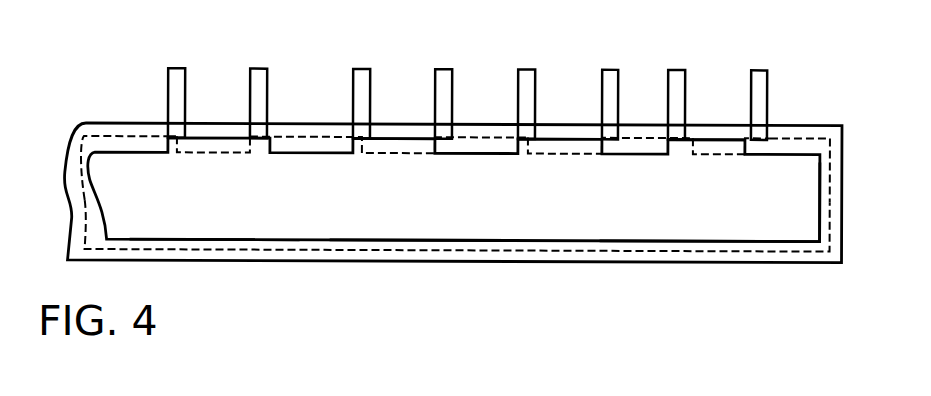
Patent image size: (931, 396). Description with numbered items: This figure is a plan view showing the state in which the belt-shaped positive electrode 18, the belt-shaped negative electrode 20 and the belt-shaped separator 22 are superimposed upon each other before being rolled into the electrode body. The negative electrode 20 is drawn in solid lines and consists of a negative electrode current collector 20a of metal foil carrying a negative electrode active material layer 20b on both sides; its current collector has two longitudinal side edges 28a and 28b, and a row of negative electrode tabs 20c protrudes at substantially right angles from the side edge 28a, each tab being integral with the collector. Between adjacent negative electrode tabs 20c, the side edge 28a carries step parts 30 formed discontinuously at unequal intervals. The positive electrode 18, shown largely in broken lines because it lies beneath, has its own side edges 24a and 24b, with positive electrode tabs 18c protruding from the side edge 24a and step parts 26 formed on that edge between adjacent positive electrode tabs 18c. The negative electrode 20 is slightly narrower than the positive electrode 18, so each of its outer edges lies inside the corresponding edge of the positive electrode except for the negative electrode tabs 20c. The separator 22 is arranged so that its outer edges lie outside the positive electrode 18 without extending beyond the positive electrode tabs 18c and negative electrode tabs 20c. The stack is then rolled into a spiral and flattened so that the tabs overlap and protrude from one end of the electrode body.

The positive electrode 18 is at (490, 126).
The positive electrode tab 18c is at (259, 67).
The negative electrode 20 is at (365, 242).
The negative electrode current collector 20a is at (437, 243).
The negative electrode active material layer 20b is at (495, 215).
The negative electrode tab 20c is at (176, 67).
The separator 22 is at (705, 262).
The side edge 24a is at (112, 135).
The side edge 24b is at (587, 251).
The step part 26 is at (538, 146).
The side edge 28a is at (722, 137).
The side edge 28b is at (217, 240).
The step part 30 is at (274, 138).